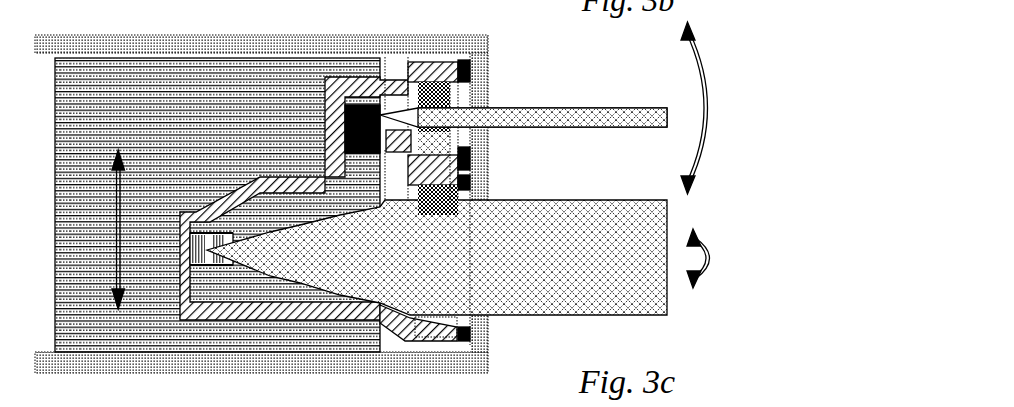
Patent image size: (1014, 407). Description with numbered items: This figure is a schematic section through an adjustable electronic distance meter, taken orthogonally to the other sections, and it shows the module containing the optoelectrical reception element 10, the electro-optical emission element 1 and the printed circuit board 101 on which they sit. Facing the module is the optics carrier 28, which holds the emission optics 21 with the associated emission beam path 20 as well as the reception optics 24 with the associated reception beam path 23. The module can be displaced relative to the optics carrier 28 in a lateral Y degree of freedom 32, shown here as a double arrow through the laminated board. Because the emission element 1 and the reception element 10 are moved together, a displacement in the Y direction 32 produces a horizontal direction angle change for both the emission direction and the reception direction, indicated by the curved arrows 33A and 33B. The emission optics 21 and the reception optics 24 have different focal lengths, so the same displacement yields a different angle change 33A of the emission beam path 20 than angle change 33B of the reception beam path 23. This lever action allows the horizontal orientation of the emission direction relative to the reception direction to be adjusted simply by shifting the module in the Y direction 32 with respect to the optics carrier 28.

The printed circuit board 101 is at (63, 93).
The second lateral Y degree of freedom 32 is at (117, 173).
The optics carrier 28 is at (335, 88).
The electro-optical emission element 1 is at (355, 107).
The emission optics 21 is at (428, 82).
The emission beam path 20 is at (502, 115).
The reception beam path 23 is at (502, 223).
The angle change of the emission direction 33A is at (698, 82).
The angle change of the reception direction 33B is at (690, 230).
The optoelectrical reception element 10 is at (203, 245).
The reception optics 24 is at (428, 325).